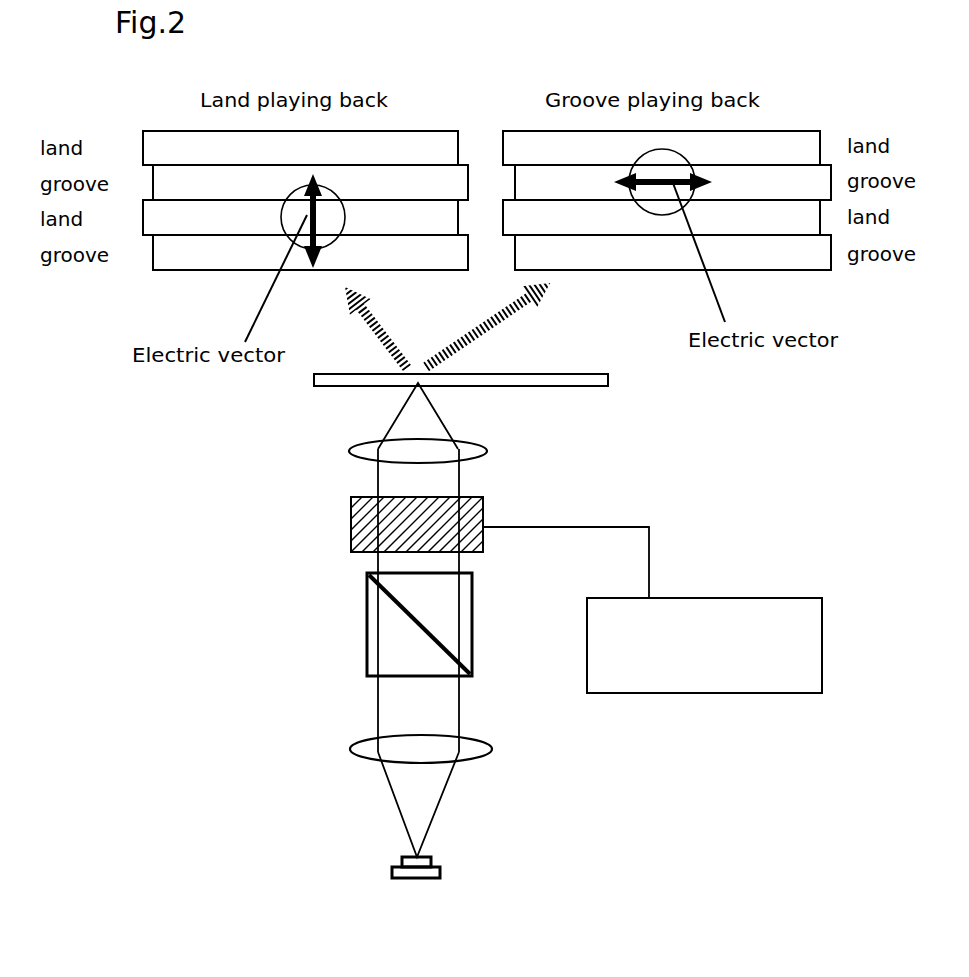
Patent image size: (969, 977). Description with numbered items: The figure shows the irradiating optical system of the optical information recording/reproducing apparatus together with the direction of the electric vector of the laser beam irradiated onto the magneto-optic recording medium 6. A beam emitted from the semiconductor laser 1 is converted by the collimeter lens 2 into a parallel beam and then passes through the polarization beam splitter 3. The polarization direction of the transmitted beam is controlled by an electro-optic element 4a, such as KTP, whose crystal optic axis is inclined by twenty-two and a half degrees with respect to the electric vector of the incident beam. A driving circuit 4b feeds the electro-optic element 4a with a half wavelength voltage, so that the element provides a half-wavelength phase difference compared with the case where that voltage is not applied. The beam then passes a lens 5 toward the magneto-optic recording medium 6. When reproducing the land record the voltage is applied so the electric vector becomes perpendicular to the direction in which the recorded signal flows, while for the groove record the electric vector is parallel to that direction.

The semiconductor laser 1 is at (415, 870).
The collimeter lens 2 is at (362, 752).
The polarization beam splitter 3 is at (462, 638).
The electro-optic element 4a is at (360, 522).
The driving circuit 4b is at (750, 680).
The objective lens 5 is at (377, 449).
The magneto-optic recording medium 6 is at (562, 380).